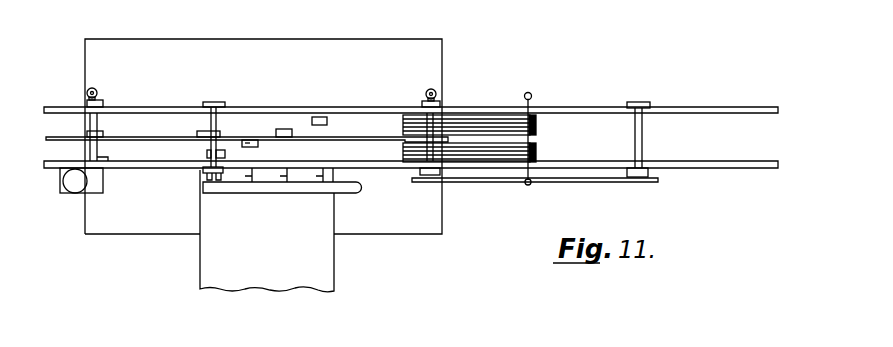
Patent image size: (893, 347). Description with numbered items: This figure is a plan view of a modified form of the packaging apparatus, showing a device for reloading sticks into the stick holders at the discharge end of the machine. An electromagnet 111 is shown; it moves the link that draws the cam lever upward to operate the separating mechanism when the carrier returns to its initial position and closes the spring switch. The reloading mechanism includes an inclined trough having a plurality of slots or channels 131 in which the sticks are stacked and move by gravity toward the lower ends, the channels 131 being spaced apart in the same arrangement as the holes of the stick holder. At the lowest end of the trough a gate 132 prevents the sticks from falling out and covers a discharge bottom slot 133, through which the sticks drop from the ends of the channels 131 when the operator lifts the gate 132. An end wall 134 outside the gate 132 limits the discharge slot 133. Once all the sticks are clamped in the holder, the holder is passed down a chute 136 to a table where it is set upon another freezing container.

The electromagnet 111 is at (70, 178).
The channels 131 is at (498, 122).
The gate 132 is at (532, 98).
The discharge bottom slot 133 is at (536, 128).
The end wall 134 is at (536, 149).
The chute 136 is at (705, 112).